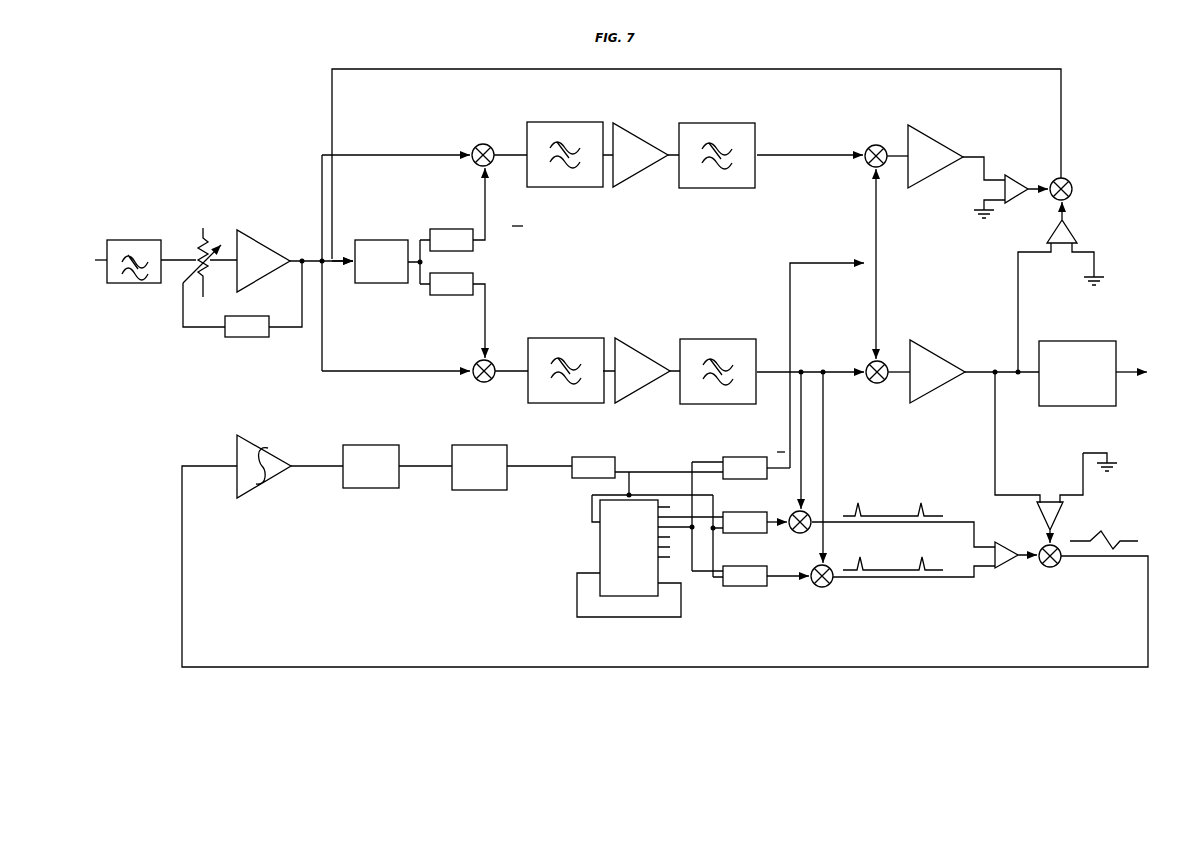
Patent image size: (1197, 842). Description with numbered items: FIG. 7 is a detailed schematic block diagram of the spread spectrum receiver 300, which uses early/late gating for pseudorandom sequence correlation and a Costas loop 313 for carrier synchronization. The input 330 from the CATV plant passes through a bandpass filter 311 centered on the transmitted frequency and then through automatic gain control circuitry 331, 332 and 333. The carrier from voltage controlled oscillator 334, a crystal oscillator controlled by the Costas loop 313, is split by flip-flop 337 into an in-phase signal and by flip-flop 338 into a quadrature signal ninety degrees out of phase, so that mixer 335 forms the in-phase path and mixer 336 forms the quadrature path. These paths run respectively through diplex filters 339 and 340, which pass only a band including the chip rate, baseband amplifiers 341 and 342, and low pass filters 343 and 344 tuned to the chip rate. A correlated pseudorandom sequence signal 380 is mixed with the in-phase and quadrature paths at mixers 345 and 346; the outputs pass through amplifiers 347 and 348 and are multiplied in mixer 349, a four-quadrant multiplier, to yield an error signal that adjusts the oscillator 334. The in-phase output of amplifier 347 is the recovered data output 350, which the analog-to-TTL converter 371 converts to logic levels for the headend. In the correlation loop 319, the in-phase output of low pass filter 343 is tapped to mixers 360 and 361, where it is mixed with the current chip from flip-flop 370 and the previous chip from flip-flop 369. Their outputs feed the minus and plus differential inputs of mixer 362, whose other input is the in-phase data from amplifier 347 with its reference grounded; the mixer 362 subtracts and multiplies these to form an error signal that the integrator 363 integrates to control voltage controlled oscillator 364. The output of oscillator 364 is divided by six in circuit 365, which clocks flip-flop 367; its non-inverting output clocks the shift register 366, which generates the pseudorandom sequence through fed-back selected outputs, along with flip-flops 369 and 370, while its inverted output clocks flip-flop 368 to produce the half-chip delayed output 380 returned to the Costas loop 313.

The spread spectrum receiver 300 is at (452, 40).
The bandpass filter 311 is at (161, 240).
The Costas loop 313 is at (696, 156).
The early/late gating correlation loop 319 is at (665, 566).
The input 330 is at (100, 259).
The automatic gain control circuitry 331 is at (205, 228).
The automatic gain control circuitry 332 is at (257, 245).
The automatic gain control circuitry 333 is at (250, 337).
The voltage controlled oscillator 334 is at (385, 240).
The mixer 335 is at (479, 381).
The mixer 336 is at (475, 147).
The flip-flop 337 is at (462, 295).
The flip-flop 338 is at (448, 229).
The diplex filter 339 is at (546, 396).
The diplex filter 340 is at (543, 178).
The baseband amplifier 341 is at (643, 375).
The baseband amplifier 342 is at (645, 160).
The low pass filter 343 is at (705, 398).
The low pass filter 344 is at (703, 180).
The mixer 345 is at (889, 386).
The mixer 346 is at (873, 146).
The amplifier 347 is at (945, 380).
The amplifier 348 is at (930, 135).
The mixer 349 is at (1073, 177).
The recovered data output 350 is at (1032, 375).
The mixer 360 is at (822, 587).
The mixer 361 is at (808, 533).
The mixer 362 is at (1059, 566).
The integrator 363 is at (264, 445).
The voltage controlled oscillator 364 is at (364, 445).
The divide by six circuit 365 is at (482, 445).
The shift register 366 is at (600, 543).
The flip-flop 367 is at (589, 457).
The flip-flop 368 is at (762, 479).
The flip-flop 369 is at (763, 533).
The flip-flop 370 is at (760, 585).
The analog-to-TTL converter 371 is at (1080, 341).
The half-chip delayed pseudorandom sequence output 380 is at (843, 261).